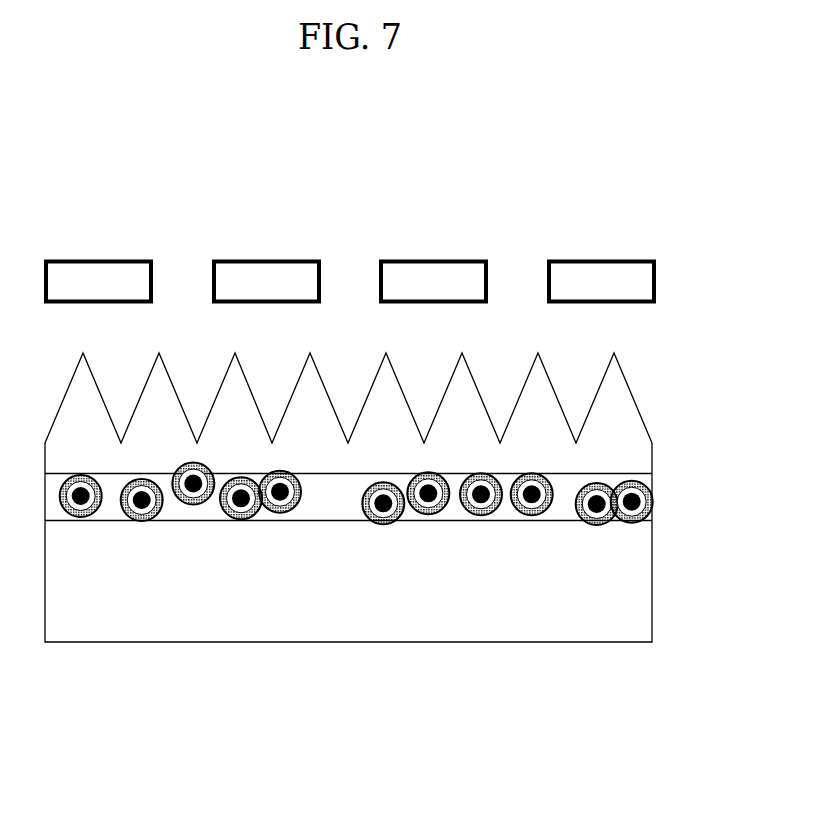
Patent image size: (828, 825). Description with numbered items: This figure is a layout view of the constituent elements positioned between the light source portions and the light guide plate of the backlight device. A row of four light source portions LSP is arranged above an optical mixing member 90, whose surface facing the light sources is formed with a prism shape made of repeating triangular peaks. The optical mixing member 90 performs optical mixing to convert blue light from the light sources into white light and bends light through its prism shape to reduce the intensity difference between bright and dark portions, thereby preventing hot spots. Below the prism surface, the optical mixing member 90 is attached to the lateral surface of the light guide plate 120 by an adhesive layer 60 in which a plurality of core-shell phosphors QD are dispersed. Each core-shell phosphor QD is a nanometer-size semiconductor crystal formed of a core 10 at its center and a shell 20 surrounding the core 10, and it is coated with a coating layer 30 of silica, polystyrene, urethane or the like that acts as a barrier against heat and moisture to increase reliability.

The core 10 is at (142, 507).
The shell 20 is at (155, 502).
The coating layer 30 is at (122, 507).
The quantum dot layer matrix (resin) 60 is at (332, 498).
The optical mixing member 90 is at (616, 408).
The light guide plate 120 is at (630, 583).
The light source portion LSP is at (432, 278).
The core-shell phosphor QD is at (150, 617).